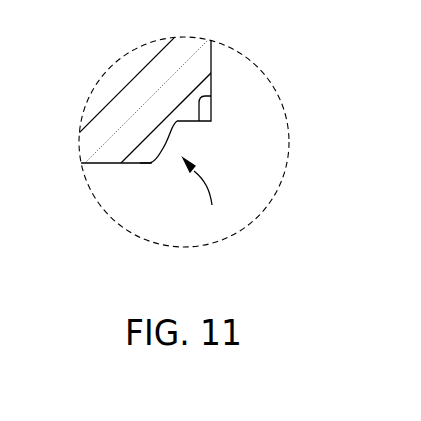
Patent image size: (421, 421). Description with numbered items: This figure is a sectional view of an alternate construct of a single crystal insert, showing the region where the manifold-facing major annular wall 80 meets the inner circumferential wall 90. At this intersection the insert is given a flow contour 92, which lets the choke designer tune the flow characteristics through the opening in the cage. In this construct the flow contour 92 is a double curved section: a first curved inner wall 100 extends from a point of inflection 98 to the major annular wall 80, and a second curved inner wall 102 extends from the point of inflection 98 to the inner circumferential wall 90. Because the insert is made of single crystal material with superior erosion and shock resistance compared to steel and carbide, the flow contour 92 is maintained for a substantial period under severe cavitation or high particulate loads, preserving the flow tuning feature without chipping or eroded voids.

The manifold-facing major annular wall 80 is at (211, 68).
The inner circumferential wall 90 is at (80, 163).
The flow contour 92 is at (202, 197).
The point of inflection 98 is at (175, 122).
The first curved inner wall 100 is at (211, 93).
The second curved inner wall 102 is at (147, 163).